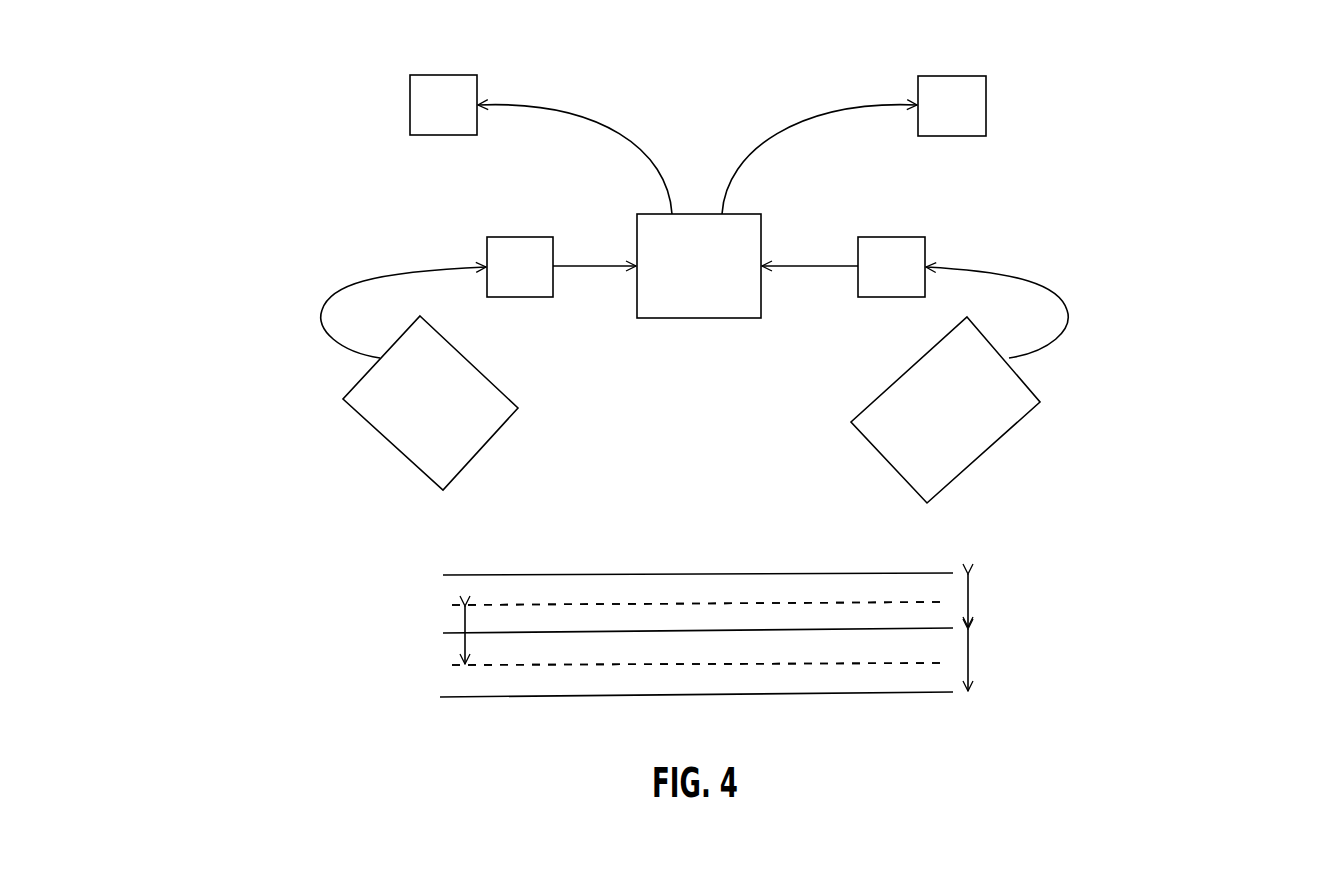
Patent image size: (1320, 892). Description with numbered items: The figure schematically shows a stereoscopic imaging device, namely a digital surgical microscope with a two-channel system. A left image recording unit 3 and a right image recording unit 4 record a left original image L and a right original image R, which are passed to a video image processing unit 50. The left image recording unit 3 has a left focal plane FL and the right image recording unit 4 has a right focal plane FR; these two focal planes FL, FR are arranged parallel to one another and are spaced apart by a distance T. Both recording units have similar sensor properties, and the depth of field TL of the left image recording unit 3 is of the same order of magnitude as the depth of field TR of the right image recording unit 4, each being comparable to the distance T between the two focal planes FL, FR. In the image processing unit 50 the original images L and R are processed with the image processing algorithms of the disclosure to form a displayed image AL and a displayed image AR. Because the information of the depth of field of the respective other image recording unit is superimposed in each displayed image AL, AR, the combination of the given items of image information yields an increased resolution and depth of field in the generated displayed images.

The image processing unit 50 is at (691, 214).
The left image recording unit 3 is at (363, 380).
The right image recording unit 4 is at (1017, 373).
The displayed image AL is at (541, 144).
The displayed image AR is at (854, 145).
The left original image L is at (561, 267).
The right original image R is at (843, 267).
The distance T is at (445, 634).
The left focal plane FL is at (447, 605).
The right focal plane FR is at (448, 665).
The depth of field TL is at (972, 598).
The depth of field TR is at (972, 670).